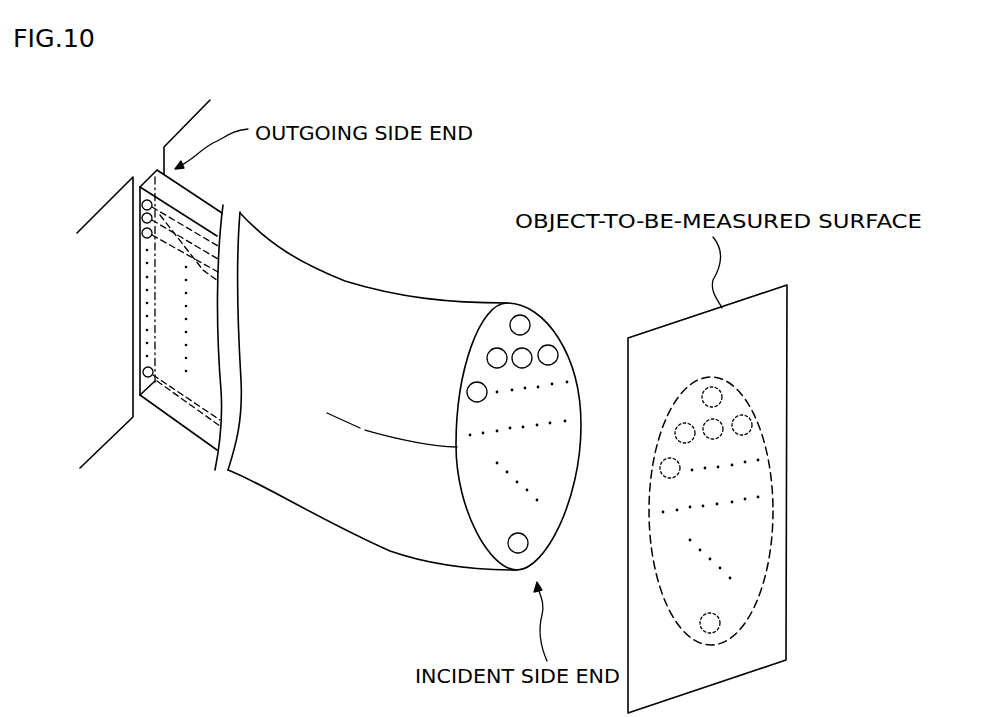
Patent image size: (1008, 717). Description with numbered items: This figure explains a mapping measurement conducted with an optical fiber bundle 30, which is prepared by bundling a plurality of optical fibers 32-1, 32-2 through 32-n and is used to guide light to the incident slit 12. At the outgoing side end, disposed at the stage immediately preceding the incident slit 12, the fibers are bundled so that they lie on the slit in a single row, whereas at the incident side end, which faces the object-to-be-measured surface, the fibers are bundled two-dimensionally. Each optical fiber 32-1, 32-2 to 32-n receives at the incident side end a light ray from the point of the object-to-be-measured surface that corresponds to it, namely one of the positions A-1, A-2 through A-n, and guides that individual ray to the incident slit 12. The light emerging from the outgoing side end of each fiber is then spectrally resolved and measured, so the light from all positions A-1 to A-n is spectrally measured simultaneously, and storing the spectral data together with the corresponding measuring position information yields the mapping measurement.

The incident slit 12 is at (150, 169).
The optical fiber bundle 30 is at (344, 281).
The optical fiber 32-1 is at (162, 205).
The optical fiber 32-2 is at (218, 281).
The optical fiber 32-n is at (152, 378).
The position of the object-to-be-measured surface A-1 is at (712, 386).
The position of the object-to-be-measured surface A-2 is at (744, 420).
The position of the object-to-be-measured surface A-n is at (717, 630).